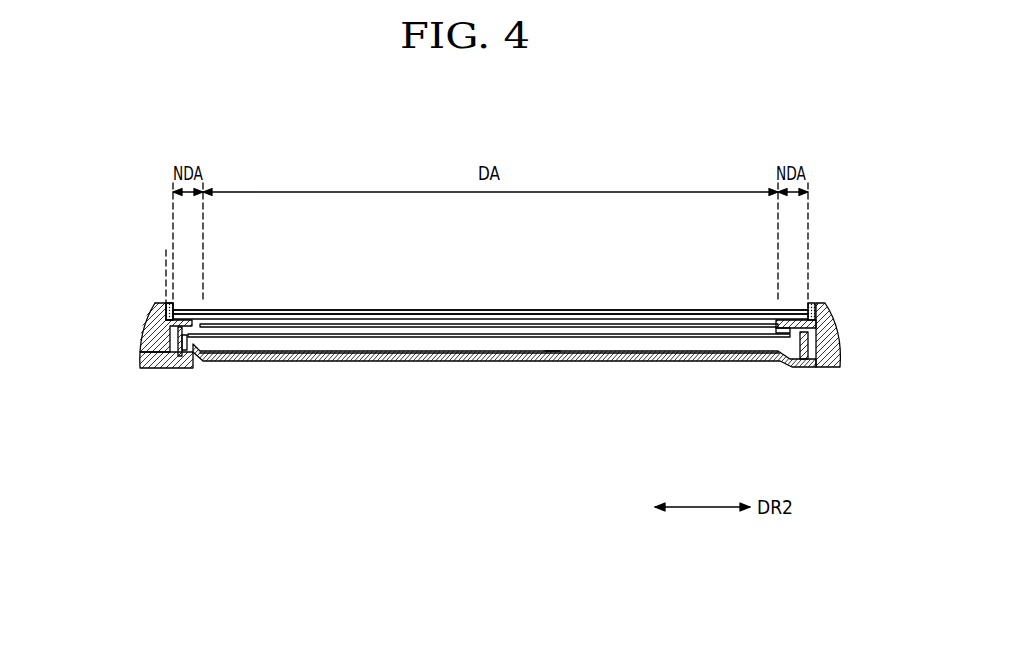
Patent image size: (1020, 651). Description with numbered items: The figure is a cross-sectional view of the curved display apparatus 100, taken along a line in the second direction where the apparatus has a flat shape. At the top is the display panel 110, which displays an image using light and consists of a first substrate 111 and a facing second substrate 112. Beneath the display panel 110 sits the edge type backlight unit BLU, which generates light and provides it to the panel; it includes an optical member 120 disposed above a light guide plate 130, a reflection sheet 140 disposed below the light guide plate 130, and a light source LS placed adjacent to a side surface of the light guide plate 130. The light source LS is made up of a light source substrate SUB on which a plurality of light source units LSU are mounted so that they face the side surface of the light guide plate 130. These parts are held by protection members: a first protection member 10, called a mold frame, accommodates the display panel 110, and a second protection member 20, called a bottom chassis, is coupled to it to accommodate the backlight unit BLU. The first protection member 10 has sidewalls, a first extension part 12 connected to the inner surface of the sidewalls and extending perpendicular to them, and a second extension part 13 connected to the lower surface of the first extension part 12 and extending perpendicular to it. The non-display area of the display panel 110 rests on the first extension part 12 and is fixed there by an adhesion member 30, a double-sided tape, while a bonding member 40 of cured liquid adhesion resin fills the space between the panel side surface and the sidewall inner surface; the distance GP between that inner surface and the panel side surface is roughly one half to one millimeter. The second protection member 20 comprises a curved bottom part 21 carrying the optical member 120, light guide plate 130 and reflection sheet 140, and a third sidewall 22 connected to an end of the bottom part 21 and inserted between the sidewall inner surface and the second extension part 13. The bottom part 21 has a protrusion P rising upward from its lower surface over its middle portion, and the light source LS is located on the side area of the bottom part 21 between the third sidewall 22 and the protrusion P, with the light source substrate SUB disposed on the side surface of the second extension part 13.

The display apparatus 100 is at (704, 147).
The display panel 110 is at (655, 241).
The first substrate 111 is at (572, 311).
The second substrate 112 is at (628, 317).
The adhesion member 30 is at (791, 309).
The bonding member 40 is at (812, 306).
The second protection member 20 is at (120, 335).
The bottom part 21 is at (177, 368).
The third sidewall 22 is at (164, 340).
The first protection member 10 is at (885, 432).
The first extension part 12 is at (777, 364).
The second extension part 13 is at (796, 365).
The optical member 120 is at (377, 330).
The light guide plate 130 is at (329, 341).
The reflection sheet 140 is at (283, 361).
The light source LS is at (250, 433).
The light source substrate SUB is at (182, 366).
The light source units LSU is at (224, 366).
The backlight unit BLU is at (392, 472).
The protrusion P is at (562, 352).
The distance GP is at (193, 250).